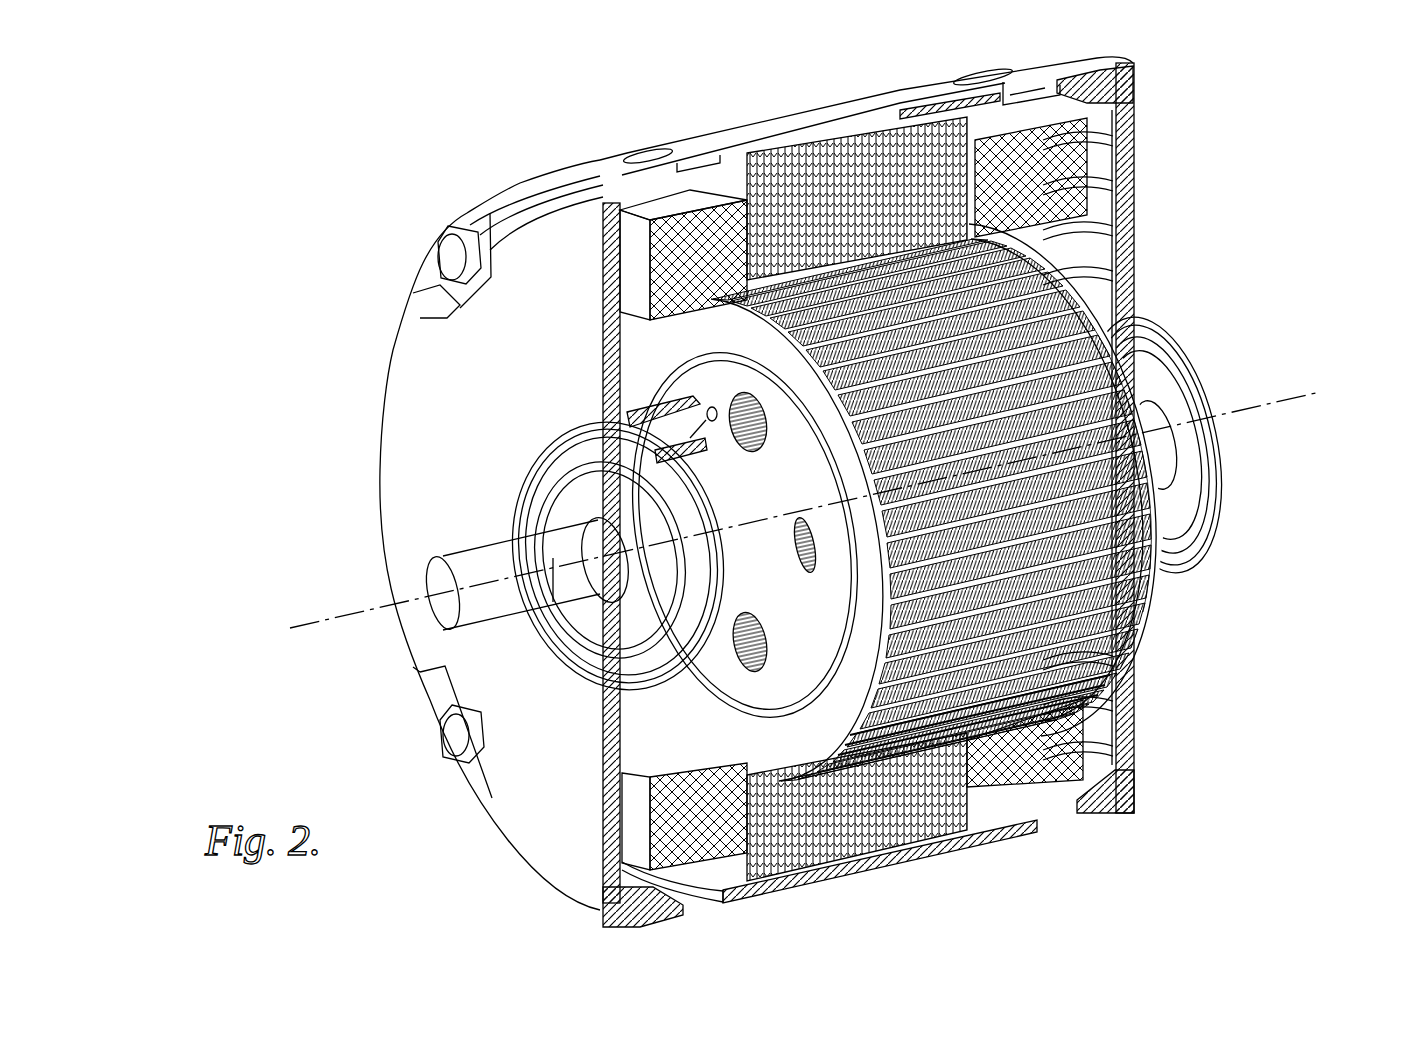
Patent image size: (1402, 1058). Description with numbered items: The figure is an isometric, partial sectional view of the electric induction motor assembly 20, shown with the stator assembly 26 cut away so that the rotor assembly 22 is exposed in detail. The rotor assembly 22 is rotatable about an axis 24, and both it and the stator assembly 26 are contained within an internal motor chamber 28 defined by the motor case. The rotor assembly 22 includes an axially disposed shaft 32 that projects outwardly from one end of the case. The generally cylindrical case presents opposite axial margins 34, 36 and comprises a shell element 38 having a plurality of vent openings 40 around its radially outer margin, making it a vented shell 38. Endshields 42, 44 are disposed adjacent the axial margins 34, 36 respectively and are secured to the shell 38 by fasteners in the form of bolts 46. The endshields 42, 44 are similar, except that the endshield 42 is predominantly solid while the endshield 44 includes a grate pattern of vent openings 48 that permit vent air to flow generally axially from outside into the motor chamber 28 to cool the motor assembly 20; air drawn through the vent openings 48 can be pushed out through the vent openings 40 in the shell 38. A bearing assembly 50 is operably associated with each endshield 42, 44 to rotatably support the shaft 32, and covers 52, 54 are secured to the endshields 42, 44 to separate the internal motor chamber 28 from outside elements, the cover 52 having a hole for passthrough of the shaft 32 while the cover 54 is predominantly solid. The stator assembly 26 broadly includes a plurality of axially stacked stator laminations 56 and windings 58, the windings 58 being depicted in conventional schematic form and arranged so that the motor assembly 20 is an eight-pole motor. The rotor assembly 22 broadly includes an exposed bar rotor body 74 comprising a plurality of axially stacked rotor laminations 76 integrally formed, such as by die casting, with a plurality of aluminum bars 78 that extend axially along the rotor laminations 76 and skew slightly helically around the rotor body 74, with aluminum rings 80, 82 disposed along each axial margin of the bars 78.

The electric induction motor assembly 20 is at (1252, 185).
The rotor assembly 22 is at (745, 680).
The axis 24 is at (350, 620).
The stator assembly 26 is at (1080, 736).
The internal motor chamber 28 is at (1075, 115).
The shaft 32 is at (520, 600).
The axial margin 34 is at (548, 170).
The axial margin 36 is at (1140, 60).
The shell element 38 is at (785, 130).
The vent openings 40 is at (700, 905).
The endshield 42 is at (412, 337).
The endshield 44 is at (1132, 105).
The bolts 46 is at (448, 735).
The vent openings 48 is at (1095, 258).
The bearing assembly 50 is at (735, 470).
The cover 52 is at (600, 652).
The cover 54 is at (1160, 375).
The stator laminations 56 is at (930, 810).
The windings 58 is at (690, 243).
The exposed bar rotor body 74 is at (1130, 500).
The rotor laminations 76 is at (990, 680).
The aluminum bars 78 is at (890, 610).
The aluminum ring 80 is at (690, 735).
The aluminum ring 82 is at (1130, 583).